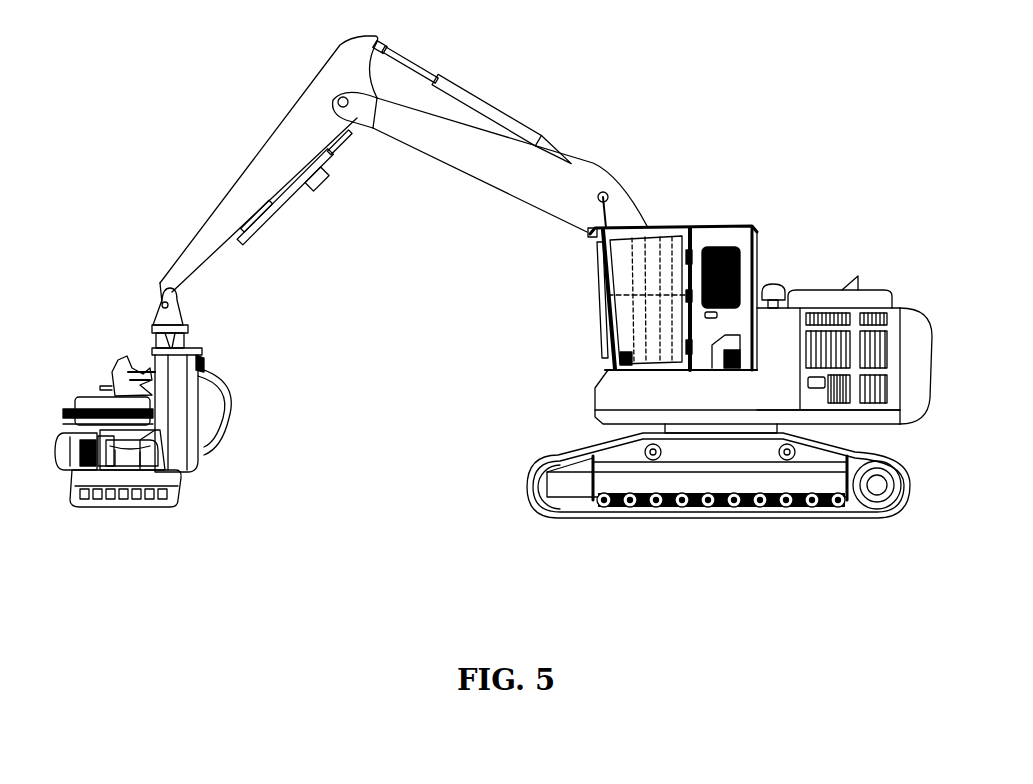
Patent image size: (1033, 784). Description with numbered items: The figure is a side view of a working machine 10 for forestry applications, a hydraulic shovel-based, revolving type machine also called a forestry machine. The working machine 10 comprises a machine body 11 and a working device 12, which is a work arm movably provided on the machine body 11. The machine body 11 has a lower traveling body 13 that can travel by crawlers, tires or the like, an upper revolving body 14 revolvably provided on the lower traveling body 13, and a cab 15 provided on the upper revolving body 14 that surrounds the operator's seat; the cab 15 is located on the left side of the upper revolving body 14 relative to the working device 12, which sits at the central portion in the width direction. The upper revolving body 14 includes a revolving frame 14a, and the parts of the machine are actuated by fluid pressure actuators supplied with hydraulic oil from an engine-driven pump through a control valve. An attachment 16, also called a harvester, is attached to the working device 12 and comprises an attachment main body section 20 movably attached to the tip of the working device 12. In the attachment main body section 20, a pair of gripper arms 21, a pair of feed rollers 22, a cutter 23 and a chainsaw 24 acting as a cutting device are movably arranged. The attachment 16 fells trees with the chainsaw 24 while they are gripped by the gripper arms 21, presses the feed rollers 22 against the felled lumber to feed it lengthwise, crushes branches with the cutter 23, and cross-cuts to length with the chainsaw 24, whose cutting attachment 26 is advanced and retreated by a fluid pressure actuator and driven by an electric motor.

The working machine 10 is at (718, 137).
The machine body 11 is at (893, 272).
The working device 12 is at (518, 86).
The lower traveling body 13 is at (911, 470).
The upper revolving body 14 is at (576, 383).
The revolving frame 14a is at (595, 411).
The cab 15 is at (598, 297).
The attachment 16 is at (224, 367).
The attachment main body section 20 is at (199, 458).
The gripper arms 21 is at (69, 405).
The feed rollers 22 is at (66, 473).
The cutter 23 is at (125, 366).
The chainsaw 24 is at (145, 508).
The cutting attachment 26 is at (100, 508).